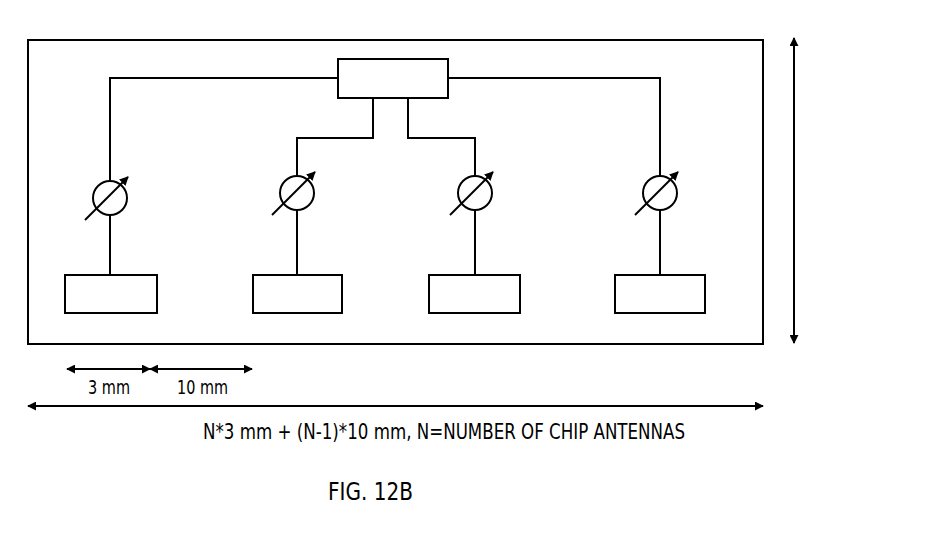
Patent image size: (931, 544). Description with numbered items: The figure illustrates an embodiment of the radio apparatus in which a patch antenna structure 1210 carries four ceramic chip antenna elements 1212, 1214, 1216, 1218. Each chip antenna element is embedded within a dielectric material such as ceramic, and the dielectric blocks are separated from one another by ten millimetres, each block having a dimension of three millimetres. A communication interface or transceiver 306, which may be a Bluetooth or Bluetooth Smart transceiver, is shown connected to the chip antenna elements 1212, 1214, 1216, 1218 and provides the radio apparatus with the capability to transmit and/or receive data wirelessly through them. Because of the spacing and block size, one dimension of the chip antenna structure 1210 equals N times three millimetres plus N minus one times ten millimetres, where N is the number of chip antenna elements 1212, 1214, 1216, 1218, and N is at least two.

The patch antenna structure 1210 is at (78, 72).
The communication interface (TRX) 306 is at (393, 78).
The ceramic chip antenna element 1212 is at (130, 306).
The ceramic chip antenna element 1214 is at (317, 306).
The ceramic chip antenna element 1216 is at (495, 306).
The ceramic chip antenna element 1218 is at (680, 306).